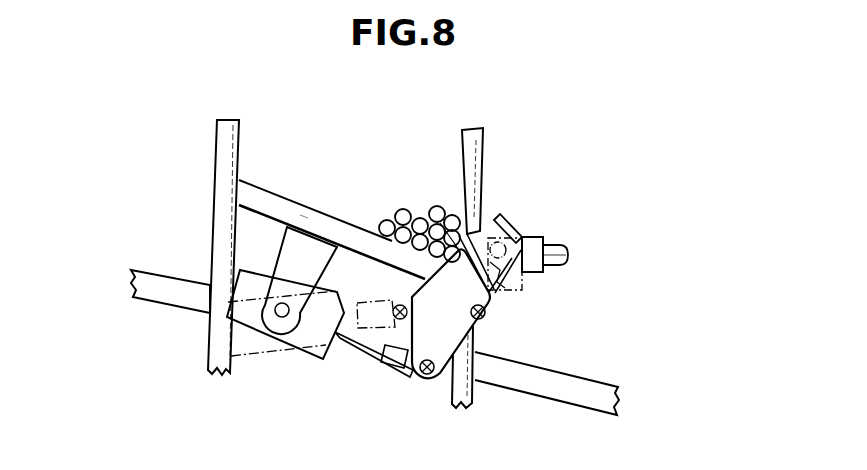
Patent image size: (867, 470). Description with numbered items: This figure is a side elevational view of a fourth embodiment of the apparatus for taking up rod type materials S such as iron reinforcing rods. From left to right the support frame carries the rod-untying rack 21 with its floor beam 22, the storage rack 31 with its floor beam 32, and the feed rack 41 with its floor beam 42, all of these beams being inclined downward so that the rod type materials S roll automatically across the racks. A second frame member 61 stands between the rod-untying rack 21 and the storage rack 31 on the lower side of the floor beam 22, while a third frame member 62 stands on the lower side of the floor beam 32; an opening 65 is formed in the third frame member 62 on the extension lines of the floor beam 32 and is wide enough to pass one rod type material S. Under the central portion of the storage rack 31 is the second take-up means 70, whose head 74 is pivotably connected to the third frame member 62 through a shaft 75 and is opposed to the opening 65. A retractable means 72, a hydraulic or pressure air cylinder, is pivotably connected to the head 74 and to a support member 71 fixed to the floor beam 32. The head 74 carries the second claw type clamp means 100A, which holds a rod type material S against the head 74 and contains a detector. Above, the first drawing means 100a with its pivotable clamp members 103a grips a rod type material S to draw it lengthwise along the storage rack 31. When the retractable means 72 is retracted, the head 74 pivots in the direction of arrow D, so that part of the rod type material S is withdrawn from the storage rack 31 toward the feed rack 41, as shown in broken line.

The rod-untying rack 21 is at (159, 262).
The floor beam 22 is at (173, 304).
The storage rack 31 is at (318, 178).
The floor beam 32 is at (272, 190).
The feed rack 41 is at (590, 364).
The floor beam 42 is at (557, 400).
The second frame member 61 is at (217, 138).
The third frame member 62 is at (483, 153).
The opening 65 is at (458, 212).
The second take-up means 70 is at (320, 368).
The support member 71 is at (277, 258).
The retractable means 72 is at (273, 343).
The head 74 is at (473, 383).
The shaft 75 is at (480, 323).
The first drawing means 100a is at (557, 240).
The second claw type clamp means 100A is at (495, 297).
The clamp member 103a is at (512, 238).
The rod type material S is at (420, 210).
The arrow D is at (365, 339).